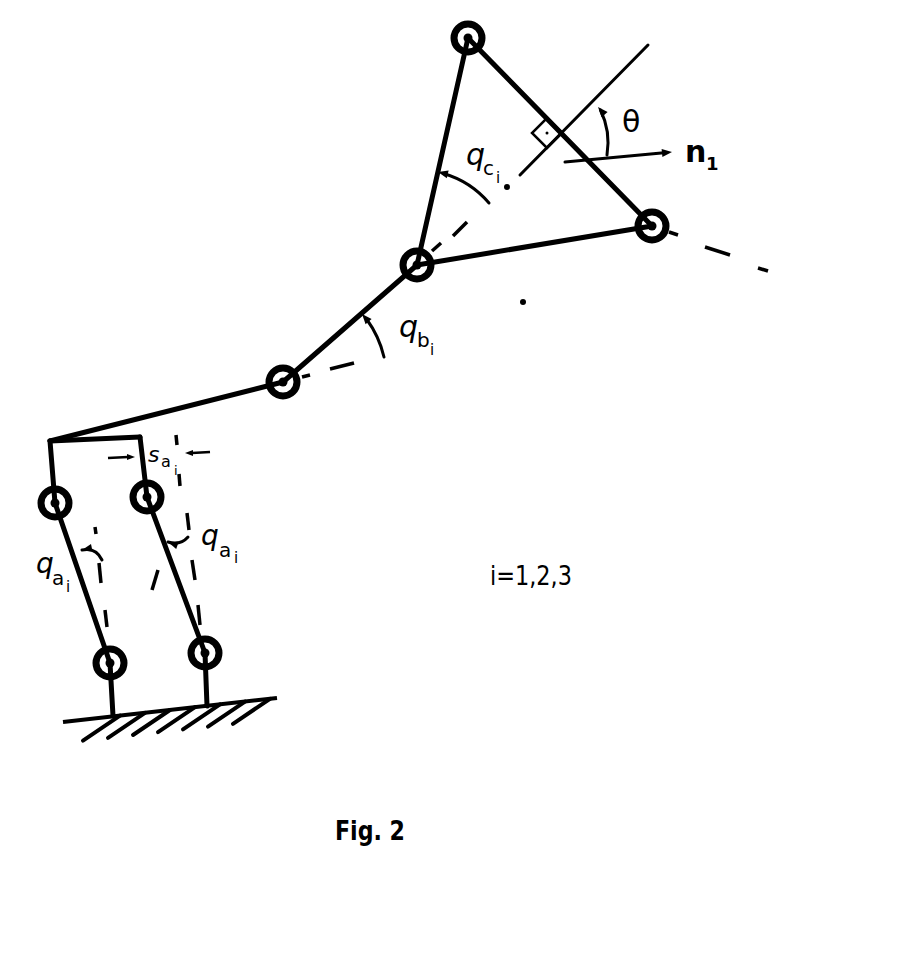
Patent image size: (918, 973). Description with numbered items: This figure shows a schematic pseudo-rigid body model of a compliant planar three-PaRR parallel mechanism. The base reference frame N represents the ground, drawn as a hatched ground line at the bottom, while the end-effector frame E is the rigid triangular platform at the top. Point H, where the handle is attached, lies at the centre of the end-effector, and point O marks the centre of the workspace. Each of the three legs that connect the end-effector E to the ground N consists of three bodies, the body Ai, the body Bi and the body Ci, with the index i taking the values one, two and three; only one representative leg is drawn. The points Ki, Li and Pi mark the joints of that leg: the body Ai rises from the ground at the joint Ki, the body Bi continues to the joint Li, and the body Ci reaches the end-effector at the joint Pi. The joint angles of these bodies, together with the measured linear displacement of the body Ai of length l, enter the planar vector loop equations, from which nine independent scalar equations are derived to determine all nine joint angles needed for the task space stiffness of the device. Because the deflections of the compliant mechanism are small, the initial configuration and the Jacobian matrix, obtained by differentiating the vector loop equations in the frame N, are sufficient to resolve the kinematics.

The end-effector frame E is at (442, 134).
The body B_i Bi is at (142, 420).
The body C_i Ci is at (348, 328).
The body A_i Ai is at (88, 607).
The base reference frame N is at (267, 700).
The point P_i Pi is at (401, 250).
The point L_i Li is at (273, 367).
The point K_i Ki is at (223, 654).
The point H is at (519, 200).
The point O is at (538, 304).